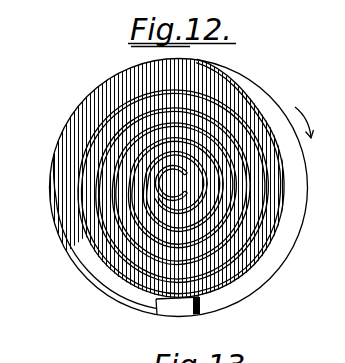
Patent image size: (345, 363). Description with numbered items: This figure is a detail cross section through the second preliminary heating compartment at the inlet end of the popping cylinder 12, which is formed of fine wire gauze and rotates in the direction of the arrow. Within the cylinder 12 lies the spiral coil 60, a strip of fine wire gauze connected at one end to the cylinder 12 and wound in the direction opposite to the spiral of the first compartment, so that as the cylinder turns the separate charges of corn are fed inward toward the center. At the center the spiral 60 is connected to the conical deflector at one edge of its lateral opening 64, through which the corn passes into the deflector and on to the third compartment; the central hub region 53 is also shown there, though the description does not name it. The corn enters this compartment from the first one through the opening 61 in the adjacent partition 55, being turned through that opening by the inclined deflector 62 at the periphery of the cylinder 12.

The popping cylinder 12 is at (117, 75).
The partition 55 is at (245, 98).
The hub 53 is at (157, 180).
The lateral opening 64 is at (183, 181).
The spiral strip 60 is at (273, 241).
The opening 61 is at (158, 306).
The inclined deflector 62 is at (198, 316).